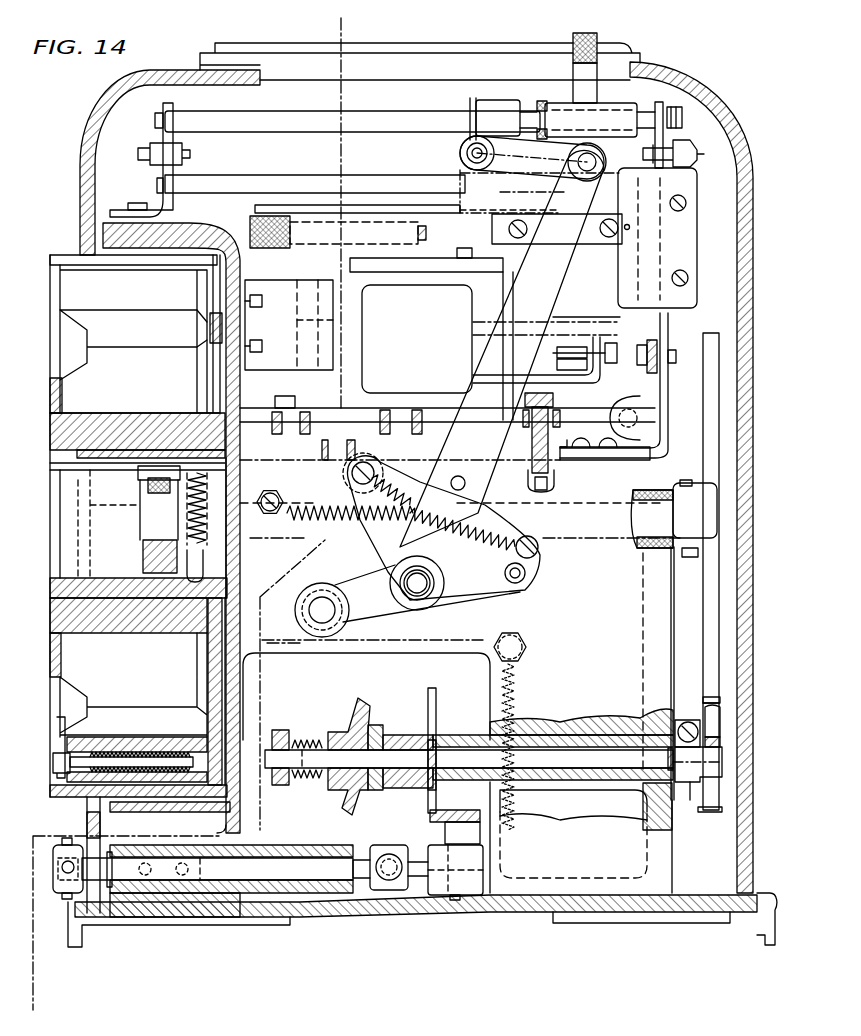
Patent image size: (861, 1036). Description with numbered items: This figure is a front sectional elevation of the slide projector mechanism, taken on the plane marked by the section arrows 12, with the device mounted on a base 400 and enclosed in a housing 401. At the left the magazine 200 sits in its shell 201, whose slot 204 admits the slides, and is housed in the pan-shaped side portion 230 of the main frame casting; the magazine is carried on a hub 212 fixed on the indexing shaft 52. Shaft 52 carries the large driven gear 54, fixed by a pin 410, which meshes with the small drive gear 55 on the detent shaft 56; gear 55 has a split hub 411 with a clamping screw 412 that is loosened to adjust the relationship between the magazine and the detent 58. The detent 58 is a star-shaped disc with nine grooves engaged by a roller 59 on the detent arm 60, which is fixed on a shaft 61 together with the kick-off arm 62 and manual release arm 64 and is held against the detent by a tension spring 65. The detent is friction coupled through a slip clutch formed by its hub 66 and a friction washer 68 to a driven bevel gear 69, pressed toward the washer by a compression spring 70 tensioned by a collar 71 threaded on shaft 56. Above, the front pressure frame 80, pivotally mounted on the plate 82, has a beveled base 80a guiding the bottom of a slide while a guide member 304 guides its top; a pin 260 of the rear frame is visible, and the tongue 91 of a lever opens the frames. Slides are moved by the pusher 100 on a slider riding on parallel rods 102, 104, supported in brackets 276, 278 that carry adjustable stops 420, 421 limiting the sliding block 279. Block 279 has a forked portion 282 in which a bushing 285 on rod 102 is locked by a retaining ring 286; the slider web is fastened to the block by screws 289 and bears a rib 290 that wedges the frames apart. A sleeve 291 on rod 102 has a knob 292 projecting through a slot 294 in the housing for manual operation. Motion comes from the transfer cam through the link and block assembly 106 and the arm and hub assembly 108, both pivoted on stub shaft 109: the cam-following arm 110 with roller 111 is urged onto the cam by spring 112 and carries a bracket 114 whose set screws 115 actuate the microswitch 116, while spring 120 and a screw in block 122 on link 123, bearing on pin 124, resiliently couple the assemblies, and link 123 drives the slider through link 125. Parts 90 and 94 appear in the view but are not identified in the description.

The section line 12 is at (342, 26).
The indexing shaft 52 is at (640, 538).
The large driven gear 54 is at (712, 406).
The small drive gear 55 is at (716, 726).
The detent shaft 56 is at (623, 783).
The detent 58 is at (437, 700).
The roller 59 is at (441, 817).
The detent arm 60 is at (470, 892).
The shaft 61 is at (364, 853).
The kick-off arm 62 is at (402, 892).
The manual release arm 64 is at (62, 888).
The tension spring 65 is at (517, 690).
The hub 66 is at (413, 733).
The friction washer 68 is at (375, 724).
The driven bevel gear 69 is at (347, 722).
The compression spring 70 is at (325, 740).
The collar 71 is at (281, 730).
The front pressure frame 80 is at (404, 270).
The base of front pressure frame 80a is at (290, 405).
The pivoted mounting plate 82 is at (247, 424).
The bracket nut 90 is at (674, 358).
The tongue 91 is at (616, 412).
The flat bar 94 is at (578, 418).
The pusher 100 is at (306, 268).
The upper rod 102 is at (338, 119).
The lower rod 104 is at (340, 188).
The link and block assembly 106 is at (366, 552).
The arm and hub assembly 108 is at (545, 577).
The stub shaft 109 is at (414, 585).
The cam-following arm 110 is at (365, 577).
The roller 111 is at (318, 592).
The spring 112 is at (332, 510).
The bracket 114 is at (562, 378).
The set screws 115 is at (598, 360).
The microswitch 116 is at (688, 233).
The spring 120 is at (505, 575).
The block 122 is at (427, 494).
The link 123 is at (545, 308).
The pin 124 is at (447, 516).
The link 125 is at (508, 150).
The magazine 200 is at (55, 431).
The shell 201 is at (62, 799).
The slot 204 is at (68, 262).
The hub 212 is at (95, 520).
The pan-shaped side portion 230 is at (236, 240).
The pin 260 is at (548, 484).
The bracket 276 is at (663, 138).
The bracket 278 is at (168, 133).
The block 279 is at (455, 209).
The forked portion 282 is at (462, 140).
The bushing 285 is at (490, 108).
The retaining ring 286 is at (468, 108).
The screws 289 is at (600, 232).
The rib 290 is at (561, 324).
The sleeve 291 is at (608, 110).
The knob 292 is at (600, 40).
The slot 294 is at (480, 75).
The guide member 304 is at (250, 360).
The base 400 is at (672, 912).
The housing 401 is at (745, 890).
The pin 410 is at (692, 559).
The split hub 411 is at (694, 810).
The clamping screw 412 is at (680, 718).
The adjustable stop 420 is at (145, 153).
The adjustable stop 421 is at (697, 156).